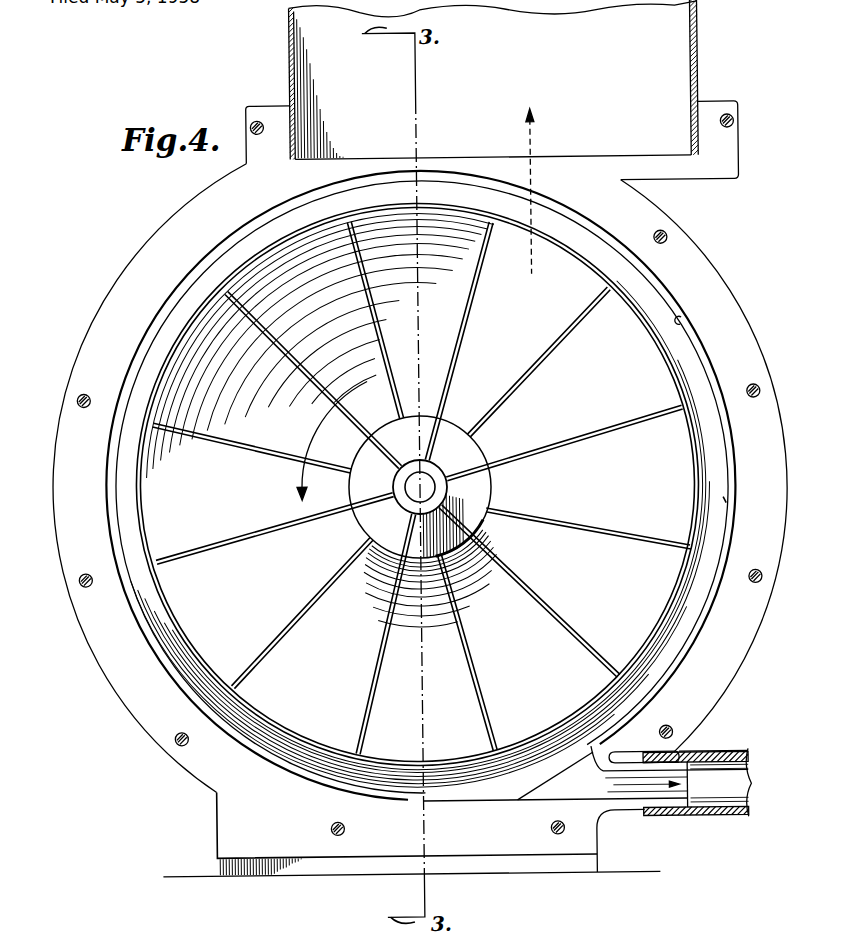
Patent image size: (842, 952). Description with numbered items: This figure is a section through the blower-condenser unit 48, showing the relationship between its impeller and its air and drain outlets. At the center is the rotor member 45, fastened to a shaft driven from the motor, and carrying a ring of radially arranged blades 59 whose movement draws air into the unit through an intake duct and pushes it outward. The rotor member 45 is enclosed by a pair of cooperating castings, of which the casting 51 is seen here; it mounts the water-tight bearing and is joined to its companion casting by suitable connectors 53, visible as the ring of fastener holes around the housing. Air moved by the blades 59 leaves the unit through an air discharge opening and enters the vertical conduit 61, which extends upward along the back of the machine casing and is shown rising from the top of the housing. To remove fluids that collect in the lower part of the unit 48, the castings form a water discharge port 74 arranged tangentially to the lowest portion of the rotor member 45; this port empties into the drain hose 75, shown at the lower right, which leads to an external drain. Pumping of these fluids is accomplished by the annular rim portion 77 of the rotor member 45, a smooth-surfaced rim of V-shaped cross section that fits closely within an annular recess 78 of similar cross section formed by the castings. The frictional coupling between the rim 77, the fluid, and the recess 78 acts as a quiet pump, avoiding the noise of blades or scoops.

The rotor member 45 is at (566, 386).
The blower-condenser unit 48 is at (142, 751).
The casting 51 is at (729, 669).
The connectors 53 is at (82, 390).
The blades 59 is at (600, 528).
The vertical conduit 61 is at (700, 42).
The water discharge port 74 is at (639, 800).
The drain hose 75 is at (713, 816).
The annular rim portion 77 is at (724, 503).
The annular recess 78 is at (685, 325).